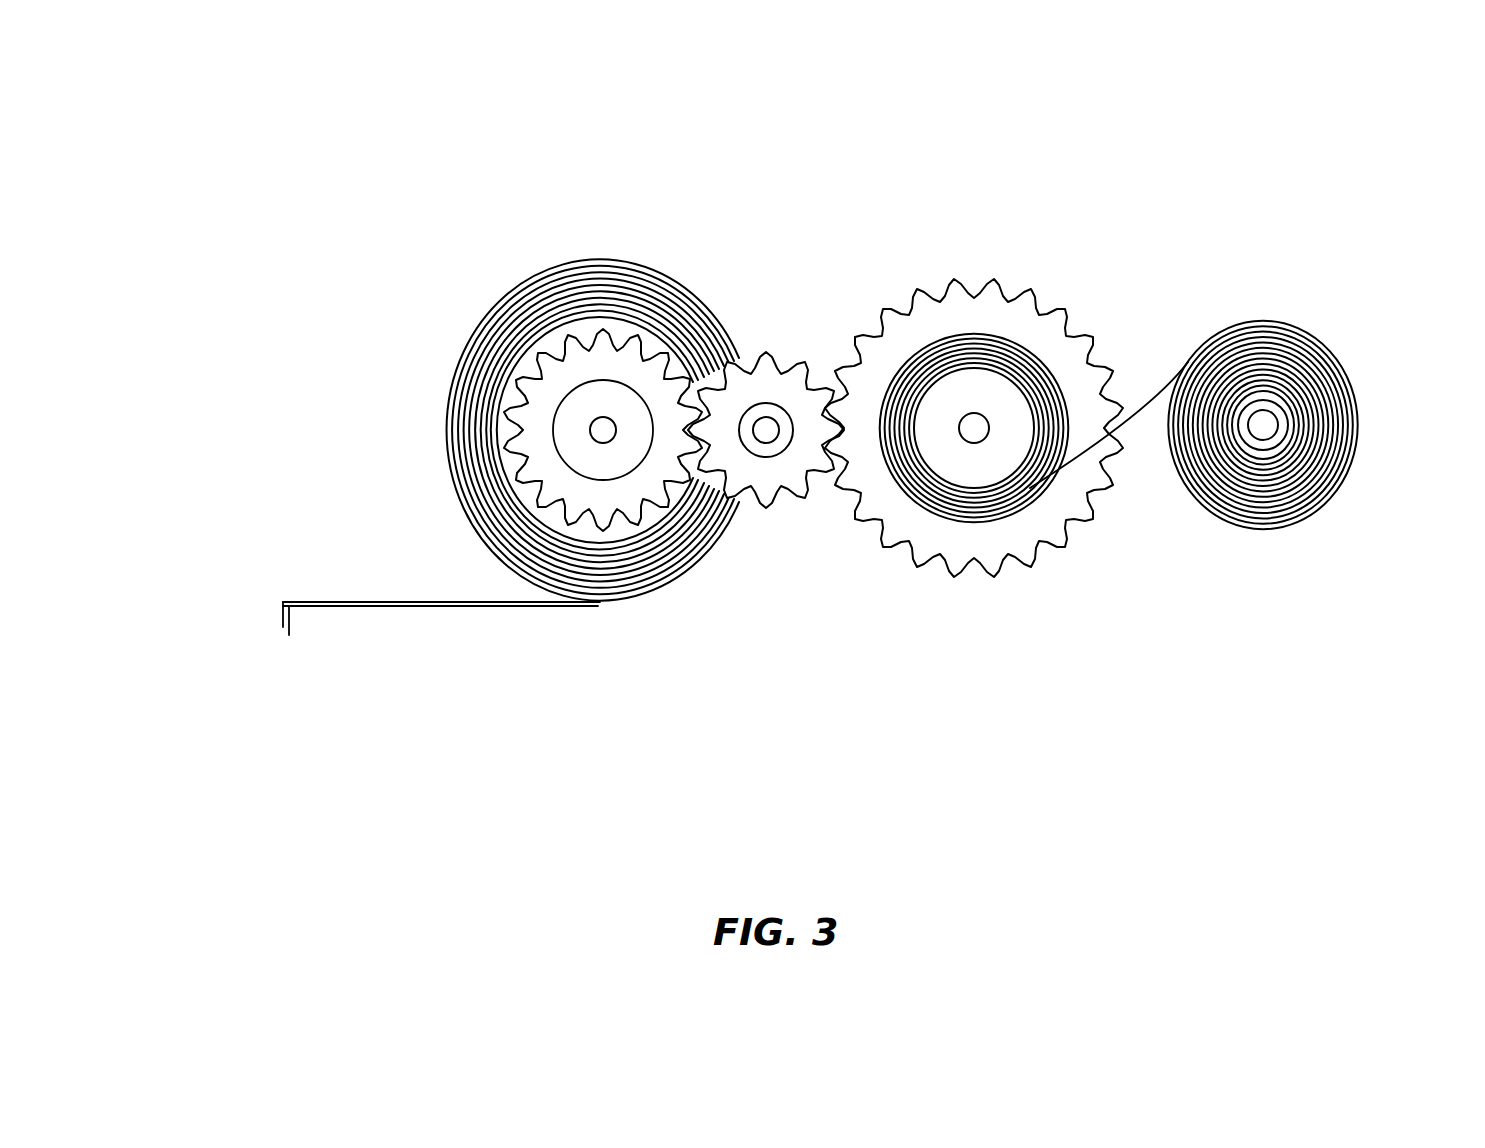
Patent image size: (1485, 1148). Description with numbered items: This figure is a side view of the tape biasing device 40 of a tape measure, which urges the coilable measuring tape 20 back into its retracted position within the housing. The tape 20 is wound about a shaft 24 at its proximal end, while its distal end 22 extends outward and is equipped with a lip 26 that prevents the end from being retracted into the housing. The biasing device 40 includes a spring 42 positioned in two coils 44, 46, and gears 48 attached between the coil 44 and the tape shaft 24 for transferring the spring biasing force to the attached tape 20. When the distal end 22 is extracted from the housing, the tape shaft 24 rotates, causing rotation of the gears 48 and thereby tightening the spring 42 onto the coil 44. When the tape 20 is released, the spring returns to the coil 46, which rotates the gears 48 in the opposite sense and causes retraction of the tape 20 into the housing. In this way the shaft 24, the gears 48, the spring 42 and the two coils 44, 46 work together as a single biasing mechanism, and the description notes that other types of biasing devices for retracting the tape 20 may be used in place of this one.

The coilable measuring tape 20 is at (593, 258).
The distal end 22 is at (308, 600).
The shaft 24 is at (603, 432).
The lip 26 is at (283, 623).
The tape biasing device 40 is at (1155, 230).
The spring 42 is at (1132, 412).
The coil 44 is at (957, 503).
The coil 46 is at (1330, 368).
The gears 48 is at (663, 343).